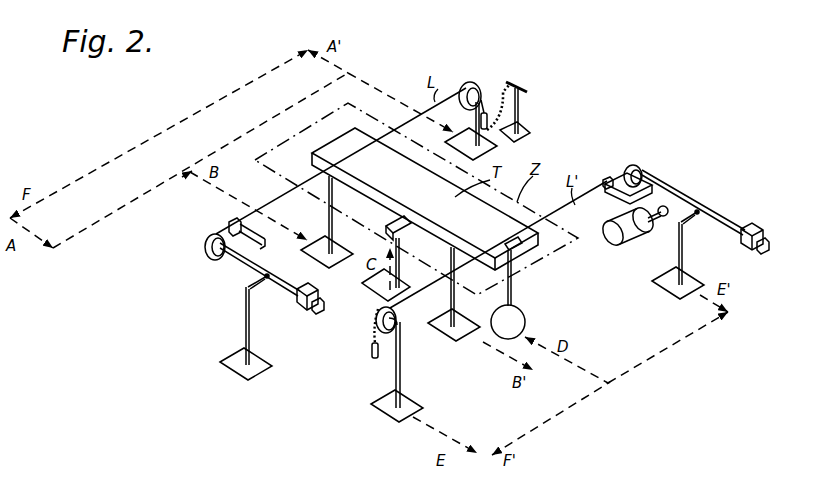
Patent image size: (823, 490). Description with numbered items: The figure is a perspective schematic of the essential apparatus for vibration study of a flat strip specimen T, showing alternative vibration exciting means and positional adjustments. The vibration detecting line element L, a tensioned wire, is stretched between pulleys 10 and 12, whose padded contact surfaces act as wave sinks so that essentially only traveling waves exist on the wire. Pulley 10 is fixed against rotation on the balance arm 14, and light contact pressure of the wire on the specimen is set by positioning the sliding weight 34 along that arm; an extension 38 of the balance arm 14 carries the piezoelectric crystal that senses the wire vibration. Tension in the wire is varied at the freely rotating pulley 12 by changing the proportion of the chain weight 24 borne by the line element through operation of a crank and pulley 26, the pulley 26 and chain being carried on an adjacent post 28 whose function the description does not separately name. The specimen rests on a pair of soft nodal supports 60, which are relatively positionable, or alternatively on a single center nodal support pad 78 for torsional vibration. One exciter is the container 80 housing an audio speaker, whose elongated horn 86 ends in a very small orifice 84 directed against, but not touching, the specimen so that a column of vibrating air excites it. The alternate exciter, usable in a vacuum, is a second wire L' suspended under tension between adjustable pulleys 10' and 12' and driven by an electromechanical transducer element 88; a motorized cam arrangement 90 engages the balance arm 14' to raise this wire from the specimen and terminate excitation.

The pulley 10 is at (198, 247).
The pulley 12 is at (471, 109).
The balance arm 14 is at (260, 311).
The chain weight 24 is at (485, 105).
The pulley 26 is at (513, 88).
The post with cross bar 28 is at (529, 97).
The sliding weight 34 is at (314, 288).
The extension of balance arm 38 is at (256, 248).
The nodal supports 60 is at (331, 182).
The pad 78 is at (398, 226).
The container 80 is at (527, 316).
The orifice 84 is at (556, 261).
The horn 86 is at (512, 292).
The electromechanical transducer element 88 is at (607, 180).
The motorized cam arrangement 90 is at (662, 218).
The pulley 10' is at (644, 159).
The pulley 12' is at (401, 364).
The balance arm 14' is at (705, 234).